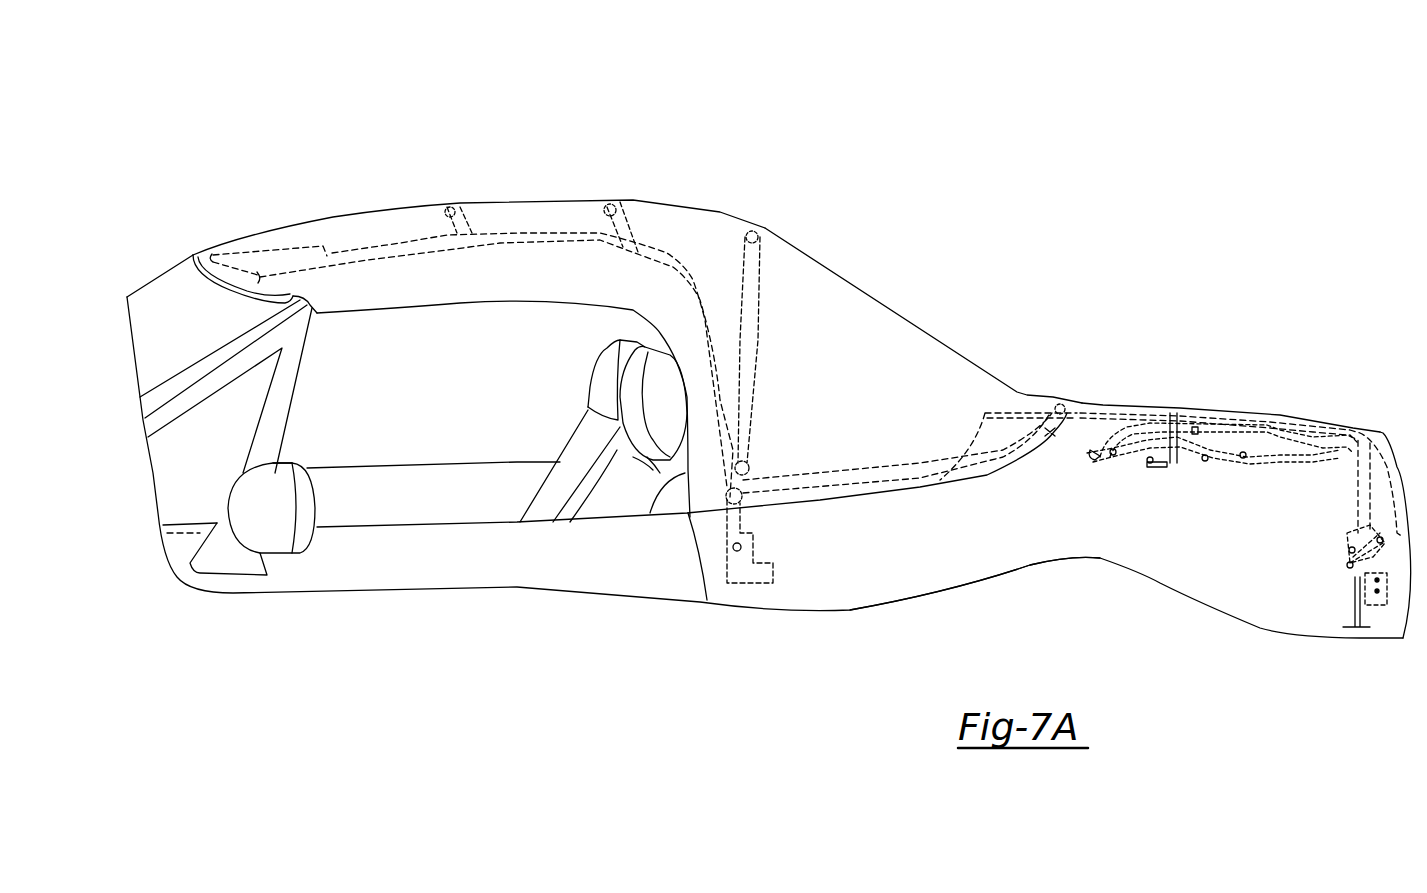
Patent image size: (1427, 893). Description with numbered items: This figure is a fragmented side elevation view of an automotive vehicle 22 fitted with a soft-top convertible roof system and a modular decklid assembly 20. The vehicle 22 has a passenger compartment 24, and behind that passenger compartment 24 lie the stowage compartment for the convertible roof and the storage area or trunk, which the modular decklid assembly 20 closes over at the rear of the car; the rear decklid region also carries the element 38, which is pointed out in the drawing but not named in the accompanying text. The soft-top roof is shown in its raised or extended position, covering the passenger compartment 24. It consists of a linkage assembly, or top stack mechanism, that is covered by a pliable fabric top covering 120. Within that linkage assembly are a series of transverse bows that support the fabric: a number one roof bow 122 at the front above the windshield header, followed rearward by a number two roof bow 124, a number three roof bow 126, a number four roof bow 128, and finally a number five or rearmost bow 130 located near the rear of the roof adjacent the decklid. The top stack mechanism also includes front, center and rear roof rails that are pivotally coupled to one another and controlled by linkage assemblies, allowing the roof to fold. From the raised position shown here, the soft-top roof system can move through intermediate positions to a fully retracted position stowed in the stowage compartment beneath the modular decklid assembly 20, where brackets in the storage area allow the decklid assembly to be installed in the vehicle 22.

The modular decklid assembly 20 is at (1215, 368).
The automotive vehicle 22 is at (338, 573).
The passenger compartment 24 is at (413, 510).
The tonneau cover / deck lid 38 is at (1242, 410).
The pliable fabric top covering 120 is at (693, 230).
The number one roof bow 122 is at (215, 243).
The number two roof bow 124 is at (450, 212).
The number three roof bow 126 is at (610, 207).
The number four roof bow 128 is at (753, 327).
The rearmost bow 130 is at (1053, 437).